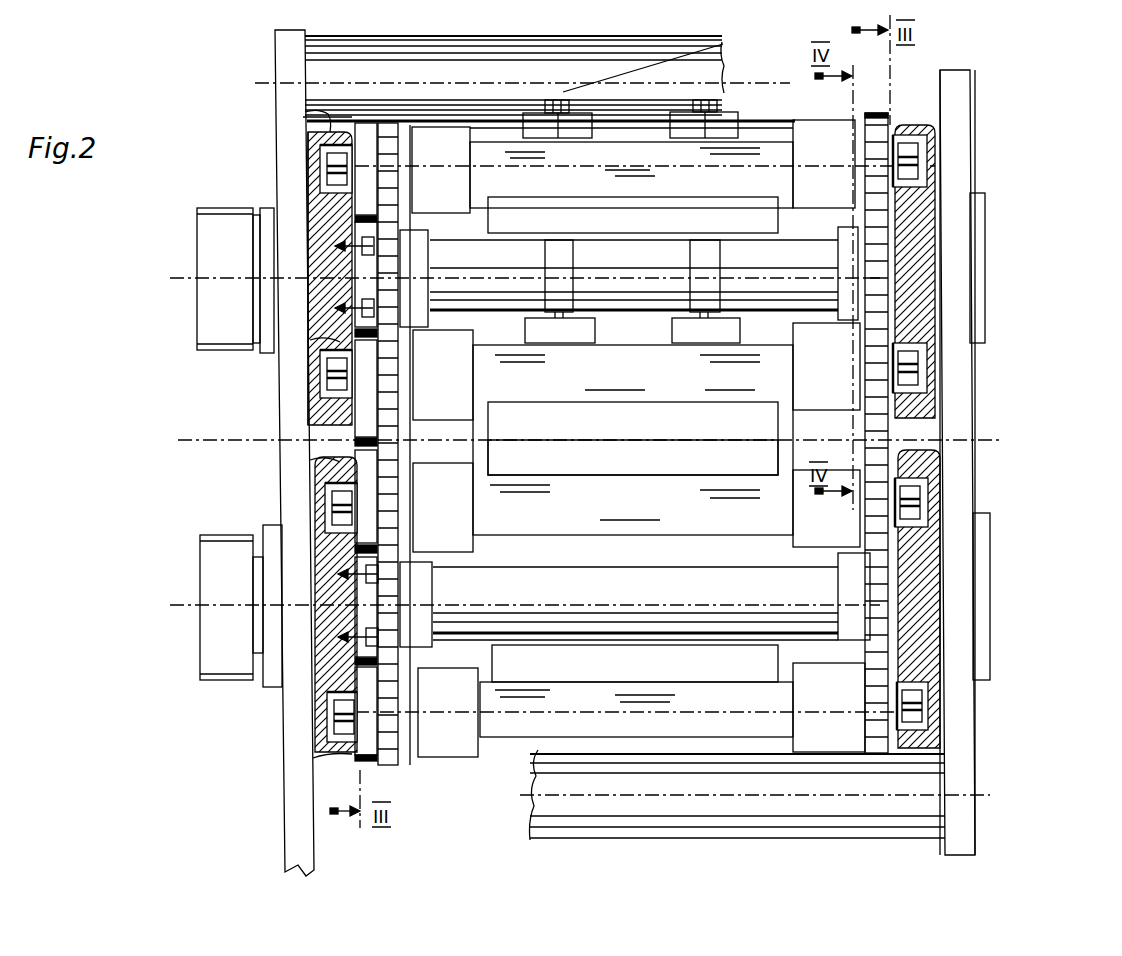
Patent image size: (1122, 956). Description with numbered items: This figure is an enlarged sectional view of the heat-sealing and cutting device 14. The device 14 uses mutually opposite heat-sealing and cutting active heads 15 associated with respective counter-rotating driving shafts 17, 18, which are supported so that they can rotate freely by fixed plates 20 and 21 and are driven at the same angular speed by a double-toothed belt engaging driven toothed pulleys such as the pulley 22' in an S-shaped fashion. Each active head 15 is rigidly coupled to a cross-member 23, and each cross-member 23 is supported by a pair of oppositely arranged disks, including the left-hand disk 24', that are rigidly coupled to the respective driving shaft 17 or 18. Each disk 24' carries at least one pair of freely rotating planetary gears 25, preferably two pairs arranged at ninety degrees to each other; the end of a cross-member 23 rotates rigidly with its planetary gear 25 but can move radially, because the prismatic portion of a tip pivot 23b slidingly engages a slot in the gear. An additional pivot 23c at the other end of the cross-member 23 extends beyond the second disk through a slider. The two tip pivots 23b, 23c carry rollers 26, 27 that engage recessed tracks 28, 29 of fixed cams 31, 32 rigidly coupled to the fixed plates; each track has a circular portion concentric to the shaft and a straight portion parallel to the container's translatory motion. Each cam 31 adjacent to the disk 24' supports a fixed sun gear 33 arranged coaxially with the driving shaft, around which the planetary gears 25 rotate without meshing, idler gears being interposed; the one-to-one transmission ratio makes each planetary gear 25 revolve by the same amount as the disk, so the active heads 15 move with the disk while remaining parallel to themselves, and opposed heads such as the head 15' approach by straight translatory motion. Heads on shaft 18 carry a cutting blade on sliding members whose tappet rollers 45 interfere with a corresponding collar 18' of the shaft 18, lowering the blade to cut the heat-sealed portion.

The heat-sealing and cutting device 14 is at (1035, 216).
The active head 15 is at (633, 444).
The active head 15' is at (633, 457).
The driving shaft 17 is at (582, 572).
The driving shaft 18 is at (644, 287).
The collar 18' is at (665, 276).
The fixed plate 20 is at (297, 790).
The fixed plate 21 is at (960, 773).
The driven toothed pulley 22' is at (211, 606).
The cross-member 23 is at (762, 152).
The tip pivot 23b is at (330, 170).
The additional pivot 23c is at (947, 145).
The disk 24' is at (426, 438).
The planetary gear 25 is at (360, 137).
The roller 26 is at (332, 147).
The roller 27 is at (913, 173).
The recessed track 28 is at (328, 116).
The recessed track 29 is at (907, 127).
The fixed cam 31 is at (330, 273).
The fixed cam 32 is at (950, 268).
The fixed sun gear 33 is at (357, 290).
The tappet roller 45 is at (723, 47).